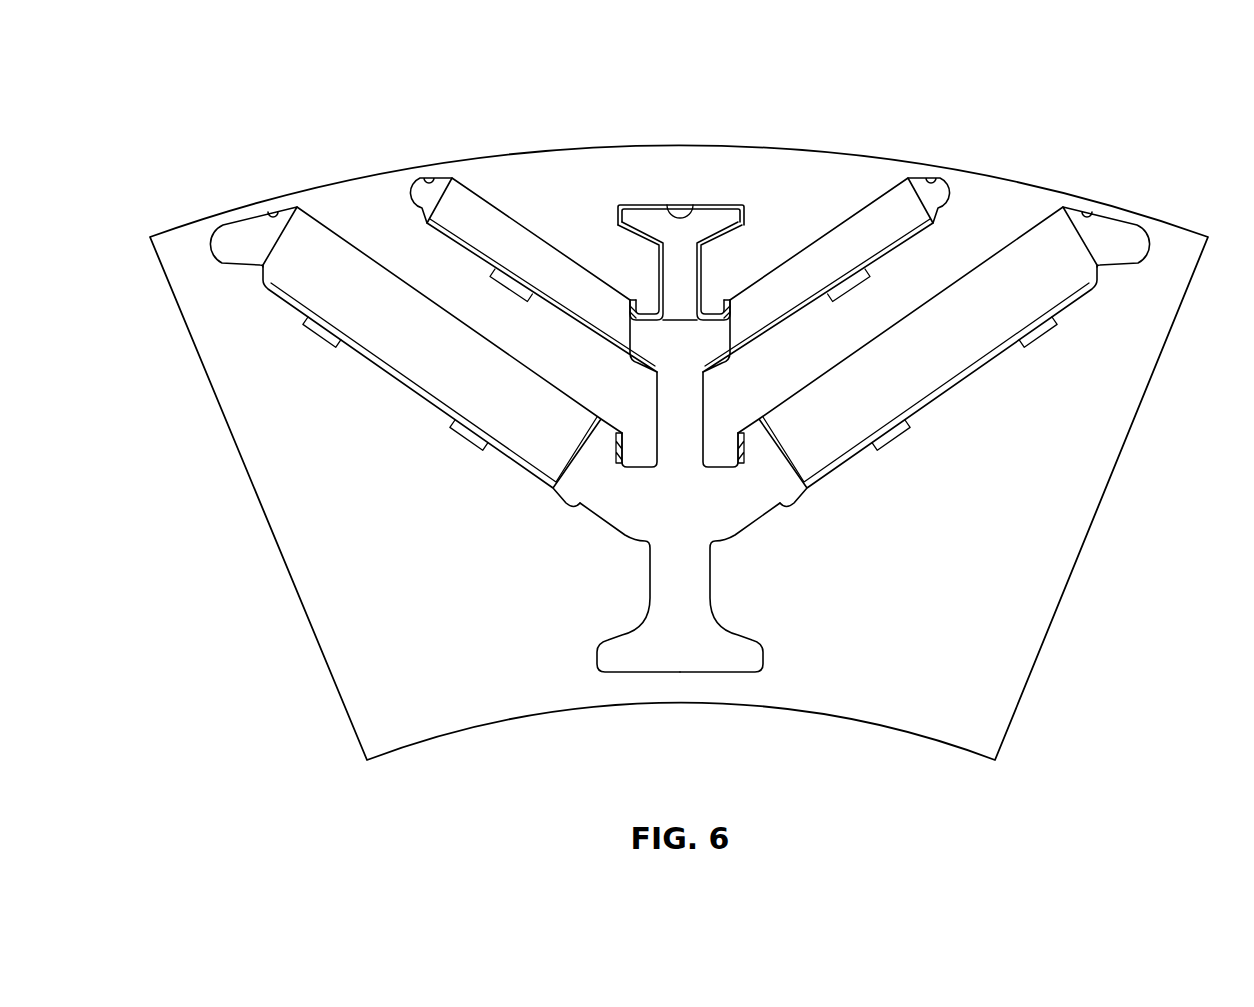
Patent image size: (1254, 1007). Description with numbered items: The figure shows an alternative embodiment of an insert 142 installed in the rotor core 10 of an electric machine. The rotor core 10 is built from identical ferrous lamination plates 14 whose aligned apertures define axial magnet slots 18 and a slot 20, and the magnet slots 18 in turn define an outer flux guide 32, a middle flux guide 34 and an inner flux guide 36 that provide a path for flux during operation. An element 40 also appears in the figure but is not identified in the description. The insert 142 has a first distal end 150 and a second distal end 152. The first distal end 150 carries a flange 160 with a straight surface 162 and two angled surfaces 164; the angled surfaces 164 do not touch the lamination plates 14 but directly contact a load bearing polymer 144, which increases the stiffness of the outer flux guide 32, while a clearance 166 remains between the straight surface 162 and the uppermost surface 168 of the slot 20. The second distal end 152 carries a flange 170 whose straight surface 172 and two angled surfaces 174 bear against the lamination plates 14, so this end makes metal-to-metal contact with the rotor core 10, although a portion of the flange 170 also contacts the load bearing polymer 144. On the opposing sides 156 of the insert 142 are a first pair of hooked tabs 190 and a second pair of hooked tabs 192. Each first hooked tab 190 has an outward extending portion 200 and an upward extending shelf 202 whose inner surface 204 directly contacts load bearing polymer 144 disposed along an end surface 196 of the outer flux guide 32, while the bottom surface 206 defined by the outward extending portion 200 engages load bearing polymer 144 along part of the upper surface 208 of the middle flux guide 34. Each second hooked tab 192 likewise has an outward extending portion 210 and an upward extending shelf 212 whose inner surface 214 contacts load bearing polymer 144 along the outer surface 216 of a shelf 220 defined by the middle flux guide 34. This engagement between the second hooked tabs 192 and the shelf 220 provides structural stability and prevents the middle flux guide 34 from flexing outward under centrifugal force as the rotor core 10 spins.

The rotor core 10 is at (1172, 113).
The lamination plates 14 is at (1065, 468).
The axial magnet slots 18 is at (272, 215).
The slot 20 is at (730, 548).
The outer flux guide 32 is at (681, 262).
The middle flux guide 34 is at (681, 419).
The inner flux guide 36 is at (690, 587).
The permanent magnet 40 is at (320, 235).
The insert 142 is at (622, 688).
The load bearing polymer 144 is at (735, 233).
The first distal end 150 is at (715, 213).
The second distal end 152 is at (718, 665).
The opposing sides 156 is at (598, 440).
The flange 160 is at (745, 193).
The straight surface 162 is at (655, 212).
The angled surfaces 164 is at (750, 223).
The clearance 166 is at (636, 214).
The uppermost surface 168 is at (692, 218).
The flange 170 is at (768, 657).
The straight surface 172 is at (740, 675).
The angled surfaces 174 is at (615, 633).
The first pair of hooked tabs 190 is at (600, 333).
The second pair of hooked tabs 192 is at (585, 506).
The end surface 196 is at (783, 317).
The outward extending portion 200 is at (792, 370).
The upward extending shelf 202 is at (735, 335).
The inner surface 204 is at (700, 303).
The bottom surface 206 is at (624, 320).
The upper surface 208 is at (657, 385).
The outward extending portion 210 is at (777, 527).
The upward extending shelf 212 is at (812, 482).
The inner surface 214 is at (775, 450).
The outer surface 216 is at (640, 452).
The shelf 220 is at (587, 477).